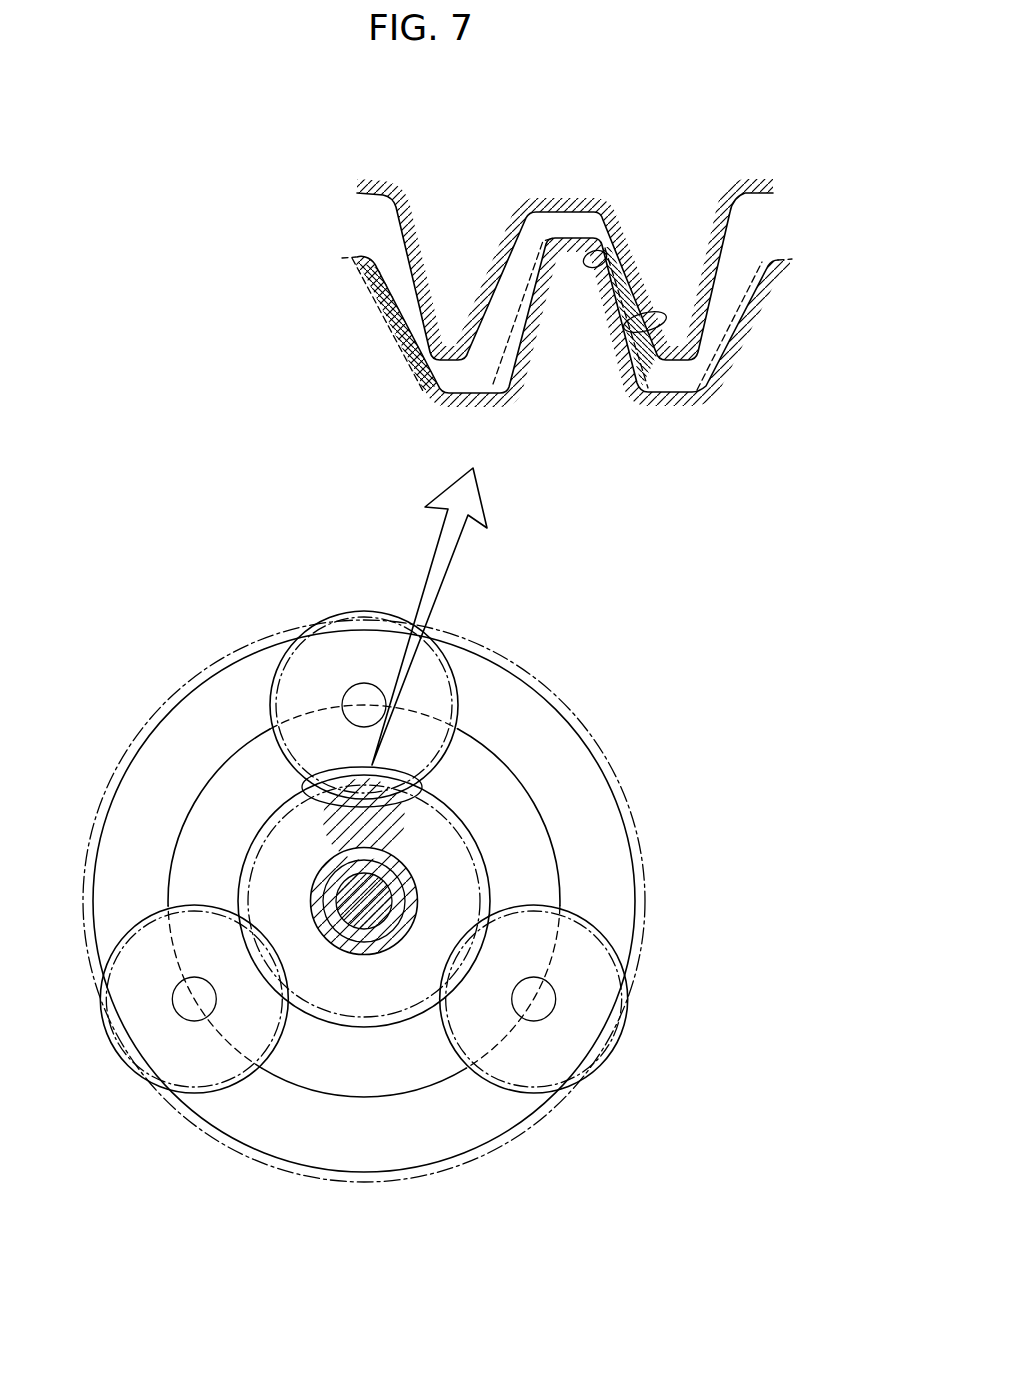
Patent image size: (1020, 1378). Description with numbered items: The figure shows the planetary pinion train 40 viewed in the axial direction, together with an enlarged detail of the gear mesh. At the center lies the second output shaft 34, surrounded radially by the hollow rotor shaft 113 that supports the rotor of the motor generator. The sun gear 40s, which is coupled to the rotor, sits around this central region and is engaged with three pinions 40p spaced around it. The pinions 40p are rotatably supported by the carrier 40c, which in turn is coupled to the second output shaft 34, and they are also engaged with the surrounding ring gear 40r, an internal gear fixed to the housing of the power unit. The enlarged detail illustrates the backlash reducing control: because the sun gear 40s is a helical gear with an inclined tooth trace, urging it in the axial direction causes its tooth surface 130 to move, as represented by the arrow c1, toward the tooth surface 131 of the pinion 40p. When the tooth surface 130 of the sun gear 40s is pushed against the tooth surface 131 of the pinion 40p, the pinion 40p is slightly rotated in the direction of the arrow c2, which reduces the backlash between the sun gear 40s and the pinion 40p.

The planetary pinion train 40 is at (391, 858).
The pinion 40p is at (486, 190).
The sun gear 40s is at (519, 613).
The carrier 40c is at (513, 773).
The ring gear 40r is at (598, 771).
The rotor shaft 113 is at (322, 878).
The second output shaft 34 is at (366, 925).
The tooth surface 130 is at (648, 323).
The tooth surface 131 is at (596, 257).
The arrow c1 is at (592, 324).
The arrow c2 is at (586, 164).